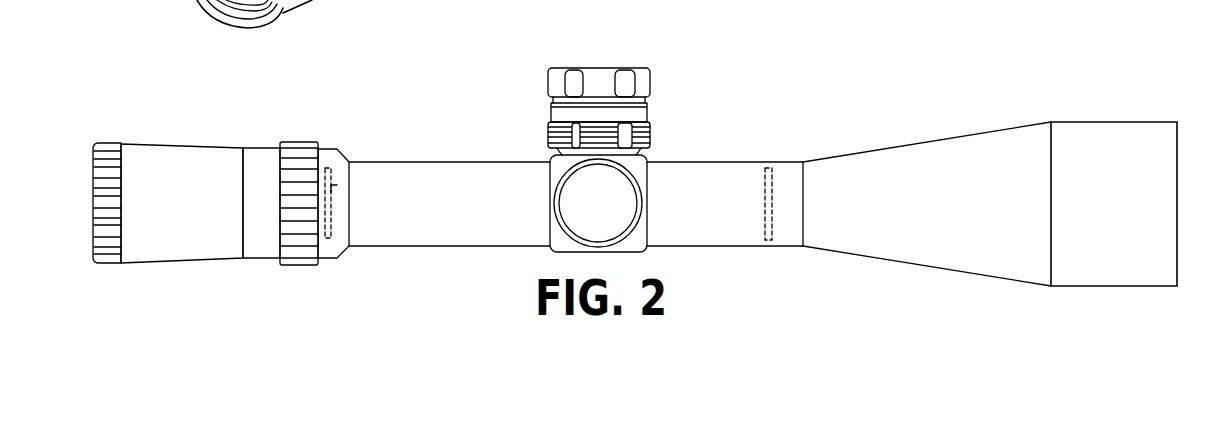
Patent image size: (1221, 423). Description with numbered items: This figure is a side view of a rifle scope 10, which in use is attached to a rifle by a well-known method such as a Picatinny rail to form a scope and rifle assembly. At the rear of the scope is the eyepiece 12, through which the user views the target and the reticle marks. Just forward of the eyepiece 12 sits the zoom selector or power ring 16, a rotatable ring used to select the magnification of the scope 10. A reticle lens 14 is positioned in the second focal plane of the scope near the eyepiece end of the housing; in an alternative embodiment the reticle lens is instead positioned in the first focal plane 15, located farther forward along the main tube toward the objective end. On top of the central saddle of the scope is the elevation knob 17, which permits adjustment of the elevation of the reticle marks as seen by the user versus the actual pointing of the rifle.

The rifle scope 10 is at (761, 68).
The eyepiece 12 is at (205, 272).
The reticle lens 14 is at (342, 180).
The first focal plane 15 is at (781, 182).
The zoom selector or power ring 16 is at (299, 142).
The elevation knob 17 is at (602, 68).